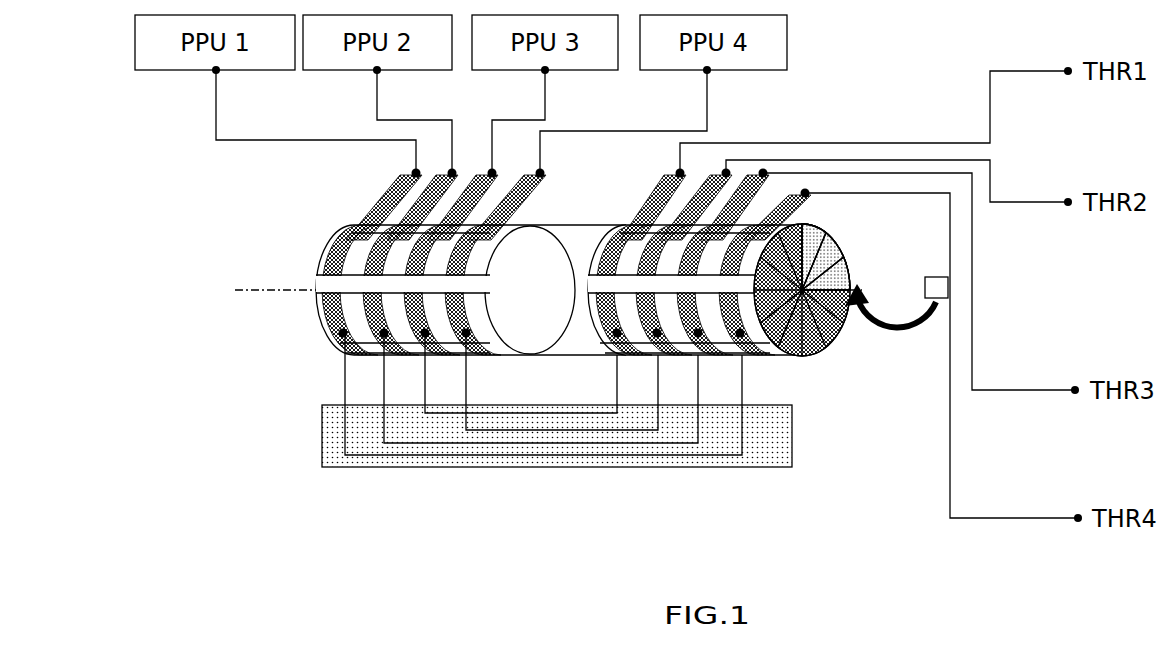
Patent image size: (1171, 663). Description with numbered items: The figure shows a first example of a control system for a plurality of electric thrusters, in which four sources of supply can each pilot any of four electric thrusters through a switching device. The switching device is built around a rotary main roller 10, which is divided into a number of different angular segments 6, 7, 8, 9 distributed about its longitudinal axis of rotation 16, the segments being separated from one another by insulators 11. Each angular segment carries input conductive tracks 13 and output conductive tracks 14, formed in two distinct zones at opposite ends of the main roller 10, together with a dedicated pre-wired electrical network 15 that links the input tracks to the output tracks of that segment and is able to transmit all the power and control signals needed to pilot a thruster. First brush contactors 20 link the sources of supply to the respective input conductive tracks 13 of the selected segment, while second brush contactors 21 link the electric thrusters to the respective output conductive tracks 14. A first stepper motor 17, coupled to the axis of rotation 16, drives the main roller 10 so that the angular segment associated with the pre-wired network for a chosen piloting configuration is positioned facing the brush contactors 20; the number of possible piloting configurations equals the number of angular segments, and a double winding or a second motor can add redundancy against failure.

The angular segment 6 is at (808, 230).
The angular segment 7 is at (838, 262).
The angular segment 8 is at (850, 322).
The angular segment 9 is at (832, 356).
The rotary main roller 10 is at (535, 345).
The insulators 11 is at (826, 245).
The input conductive tracks 13 is at (333, 250).
The output conductive tracks 14 is at (596, 248).
The dedicated pre-wired electrical network 15 is at (768, 455).
The axis of rotation 16 is at (928, 277).
The first stepper motor 17 is at (940, 288).
The first brush contactors 20 is at (385, 205).
The second brush contactors 21 is at (698, 175).